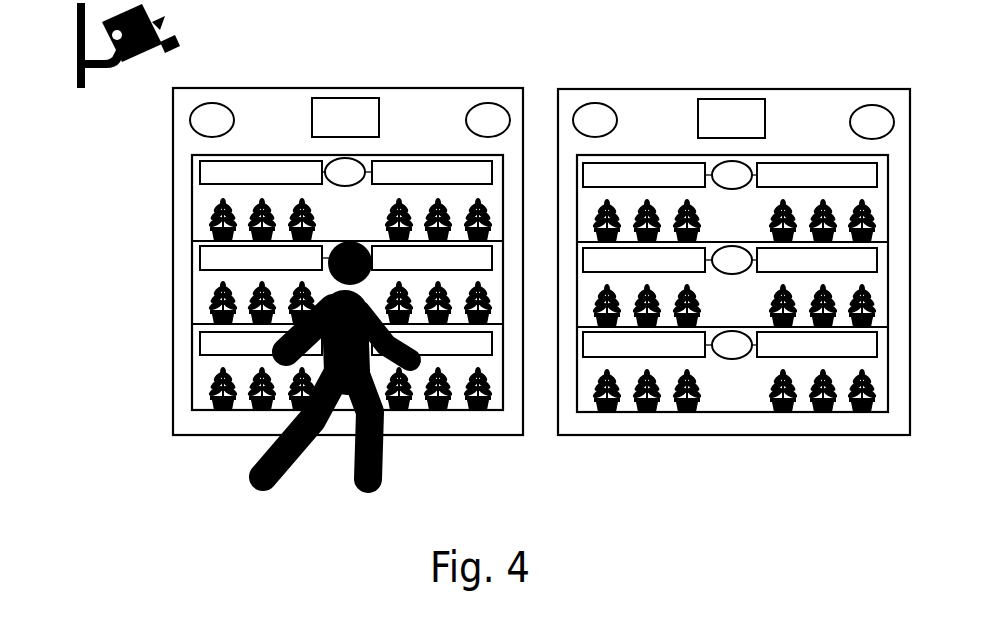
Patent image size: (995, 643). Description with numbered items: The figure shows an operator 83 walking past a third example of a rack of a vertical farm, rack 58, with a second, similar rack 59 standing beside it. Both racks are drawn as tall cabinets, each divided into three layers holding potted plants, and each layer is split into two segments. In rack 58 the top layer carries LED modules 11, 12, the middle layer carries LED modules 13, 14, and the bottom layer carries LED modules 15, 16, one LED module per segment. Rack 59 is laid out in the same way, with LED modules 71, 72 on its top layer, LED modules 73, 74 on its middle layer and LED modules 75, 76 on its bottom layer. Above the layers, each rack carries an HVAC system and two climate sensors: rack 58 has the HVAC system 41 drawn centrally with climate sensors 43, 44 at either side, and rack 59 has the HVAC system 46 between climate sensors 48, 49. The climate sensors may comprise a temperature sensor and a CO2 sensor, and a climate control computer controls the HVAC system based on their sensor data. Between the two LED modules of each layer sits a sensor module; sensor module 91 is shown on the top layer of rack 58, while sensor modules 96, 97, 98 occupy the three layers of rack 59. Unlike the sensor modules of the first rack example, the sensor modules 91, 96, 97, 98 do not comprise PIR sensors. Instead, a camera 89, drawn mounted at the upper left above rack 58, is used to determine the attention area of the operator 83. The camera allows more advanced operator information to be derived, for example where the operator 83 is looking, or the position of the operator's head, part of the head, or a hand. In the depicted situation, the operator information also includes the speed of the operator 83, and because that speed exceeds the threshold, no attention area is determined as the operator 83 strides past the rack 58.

The camera 89 is at (150, 33).
The rack 58 is at (425, 87).
The rack 59 is at (807, 89).
The operator 83 is at (378, 462).
The HVAC system 41 is at (345, 117).
The climate sensor 43 is at (212, 120).
The climate sensor 44 is at (488, 120).
The HVAC system 46 is at (731, 118).
The climate sensor 48 is at (595, 120).
The climate sensor 49 is at (872, 122).
The LED module 11 is at (262, 201).
The LED module 12 is at (429, 201).
The LED module 13 is at (265, 285).
The LED module 14 is at (433, 285).
The LED module 15 is at (261, 371).
The LED module 16 is at (433, 371).
The sensor module 91 is at (345, 172).
The LED module 71 is at (647, 202).
The LED module 72 is at (815, 202).
The LED module 73 is at (647, 287).
The LED module 74 is at (815, 287).
The LED module 75 is at (647, 372).
The LED module 76 is at (815, 372).
The sensor module 96 is at (732, 175).
The sensor module 97 is at (732, 260).
The sensor module 98 is at (732, 345).